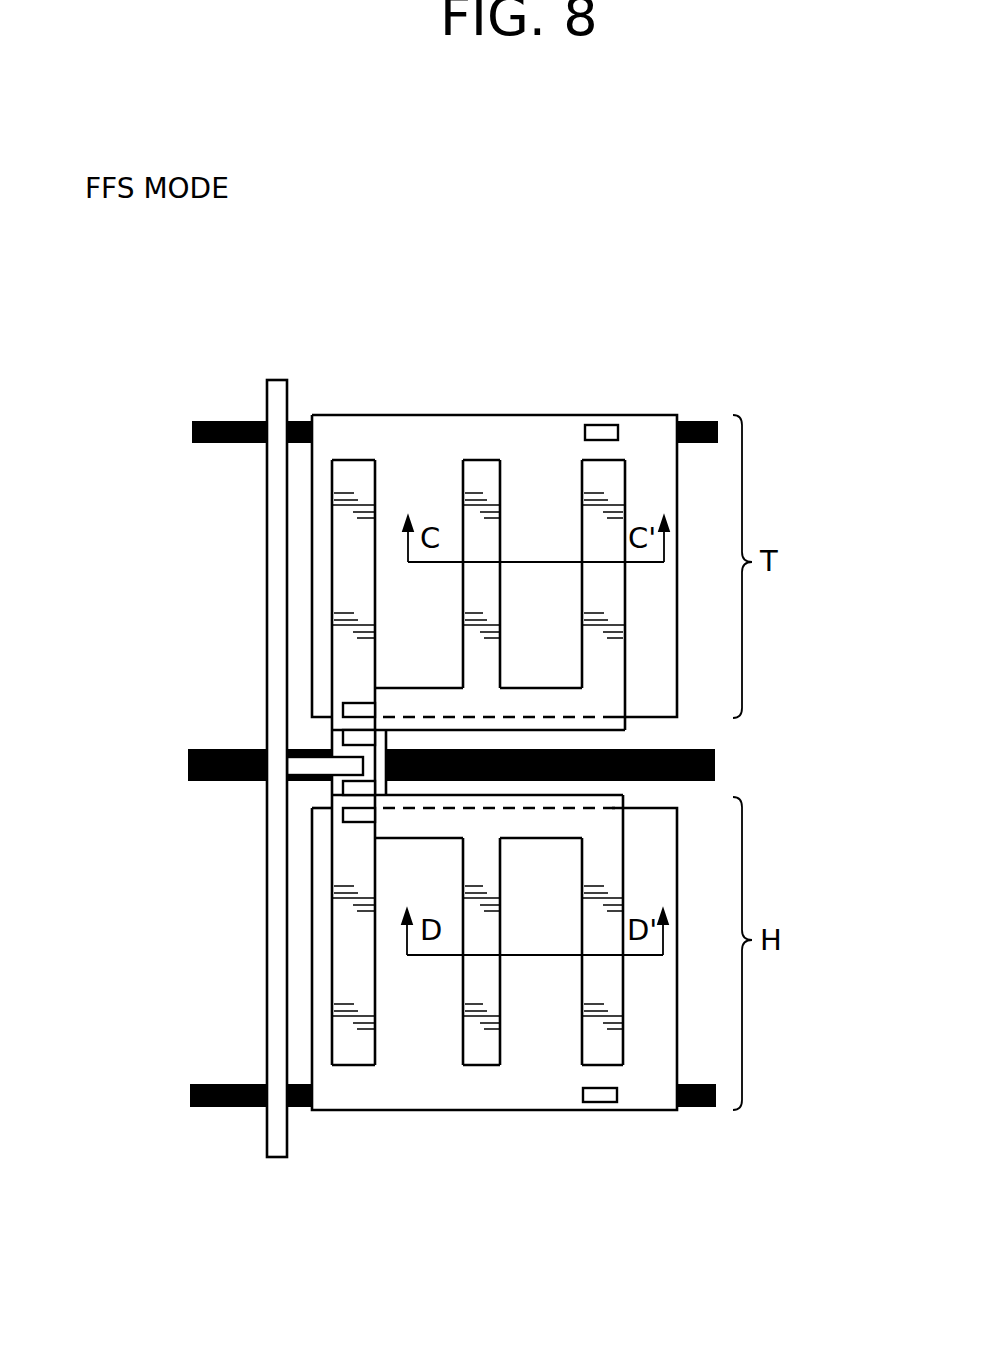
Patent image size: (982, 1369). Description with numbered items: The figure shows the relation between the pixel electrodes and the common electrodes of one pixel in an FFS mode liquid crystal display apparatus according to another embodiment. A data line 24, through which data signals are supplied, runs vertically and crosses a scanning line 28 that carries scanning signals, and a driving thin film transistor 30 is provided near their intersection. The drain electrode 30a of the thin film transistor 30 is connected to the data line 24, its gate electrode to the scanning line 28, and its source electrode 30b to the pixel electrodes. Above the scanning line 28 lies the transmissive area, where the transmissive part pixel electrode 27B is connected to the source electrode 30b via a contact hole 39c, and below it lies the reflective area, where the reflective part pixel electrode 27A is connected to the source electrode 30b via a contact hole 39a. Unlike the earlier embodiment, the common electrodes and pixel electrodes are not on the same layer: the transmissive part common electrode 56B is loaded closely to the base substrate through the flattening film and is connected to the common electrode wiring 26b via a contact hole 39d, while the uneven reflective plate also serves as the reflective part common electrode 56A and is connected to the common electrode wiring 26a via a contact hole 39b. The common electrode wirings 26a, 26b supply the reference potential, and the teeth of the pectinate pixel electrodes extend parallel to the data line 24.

The data line 24 is at (275, 400).
The common electrode wiring 26a is at (215, 1083).
The common electrode wiring 26b is at (222, 443).
The reflective part pixel electrode 27A is at (578, 1038).
The transmissive part pixel electrode 27B is at (625, 638).
The scanning line 28 is at (187, 767).
The driving thin film transistor 30 is at (378, 755).
The drain electrode 30a is at (298, 775).
The source electrode 30b is at (333, 737).
The contact hole 39a is at (357, 823).
The contact hole 39b is at (617, 1093).
The contact hole 39c is at (355, 703).
The contact hole 39d is at (602, 425).
The reflective part common electrode 56A is at (430, 1112).
The transmissive part common electrode 56B is at (403, 413).